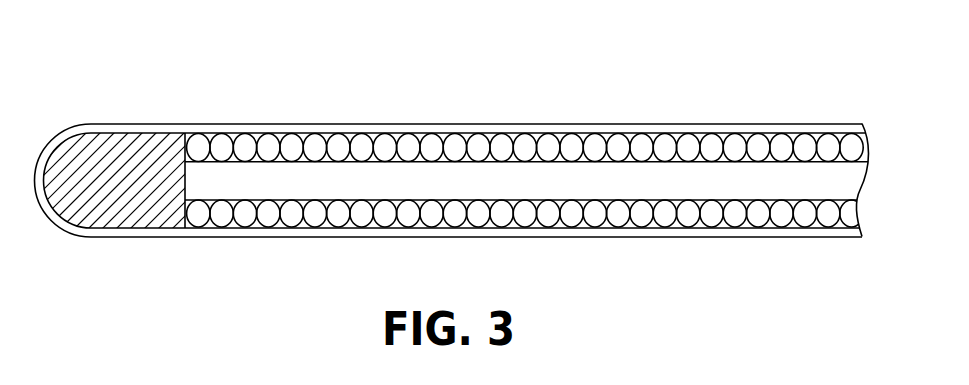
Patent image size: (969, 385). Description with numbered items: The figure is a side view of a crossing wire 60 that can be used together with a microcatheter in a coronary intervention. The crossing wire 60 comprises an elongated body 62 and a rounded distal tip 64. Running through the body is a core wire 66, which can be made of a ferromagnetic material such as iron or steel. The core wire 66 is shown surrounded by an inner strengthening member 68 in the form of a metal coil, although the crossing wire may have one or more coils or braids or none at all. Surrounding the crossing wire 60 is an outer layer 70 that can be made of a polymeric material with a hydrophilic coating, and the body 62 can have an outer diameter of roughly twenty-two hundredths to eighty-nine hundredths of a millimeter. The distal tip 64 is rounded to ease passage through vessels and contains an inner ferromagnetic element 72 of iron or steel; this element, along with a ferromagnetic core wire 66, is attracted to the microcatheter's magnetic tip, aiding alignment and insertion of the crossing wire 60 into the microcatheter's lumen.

The crossing wire 60 is at (508, 58).
The elongated body 62 is at (611, 95).
The rounded distal tip 64 is at (133, 97).
The core wire 66 is at (517, 190).
The inner strengthening member 68 is at (301, 147).
The outer layer 70 is at (401, 131).
The inner ferromagnetic element 72 is at (128, 215).